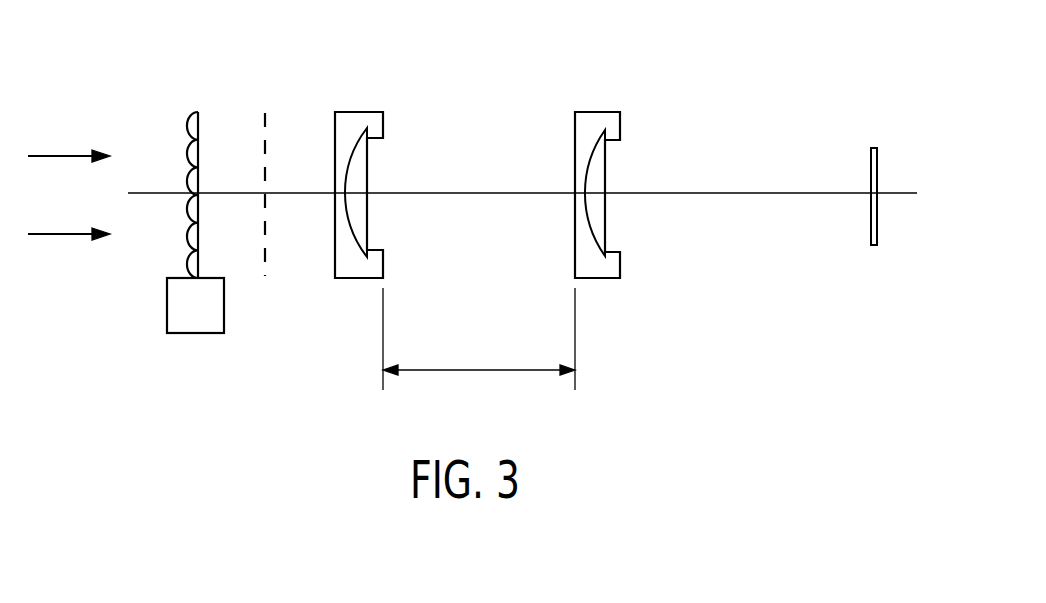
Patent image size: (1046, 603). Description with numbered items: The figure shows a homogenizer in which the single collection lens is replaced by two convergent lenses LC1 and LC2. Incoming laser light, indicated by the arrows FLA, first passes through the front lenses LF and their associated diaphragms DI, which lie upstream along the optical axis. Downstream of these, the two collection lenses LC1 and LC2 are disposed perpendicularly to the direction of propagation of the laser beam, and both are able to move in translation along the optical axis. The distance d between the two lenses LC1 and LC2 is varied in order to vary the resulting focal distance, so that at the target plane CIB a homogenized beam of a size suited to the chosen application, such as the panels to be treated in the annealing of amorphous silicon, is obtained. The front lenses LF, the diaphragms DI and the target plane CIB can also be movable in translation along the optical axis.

The incident light beams FLA is at (69, 182).
The front lenses LF is at (188, 113).
The diaphragms DI is at (267, 123).
The convergent lens LC1 is at (367, 112).
The convergent lens LC2 is at (607, 112).
The target plane CIB is at (872, 148).
The distance d is at (479, 339).